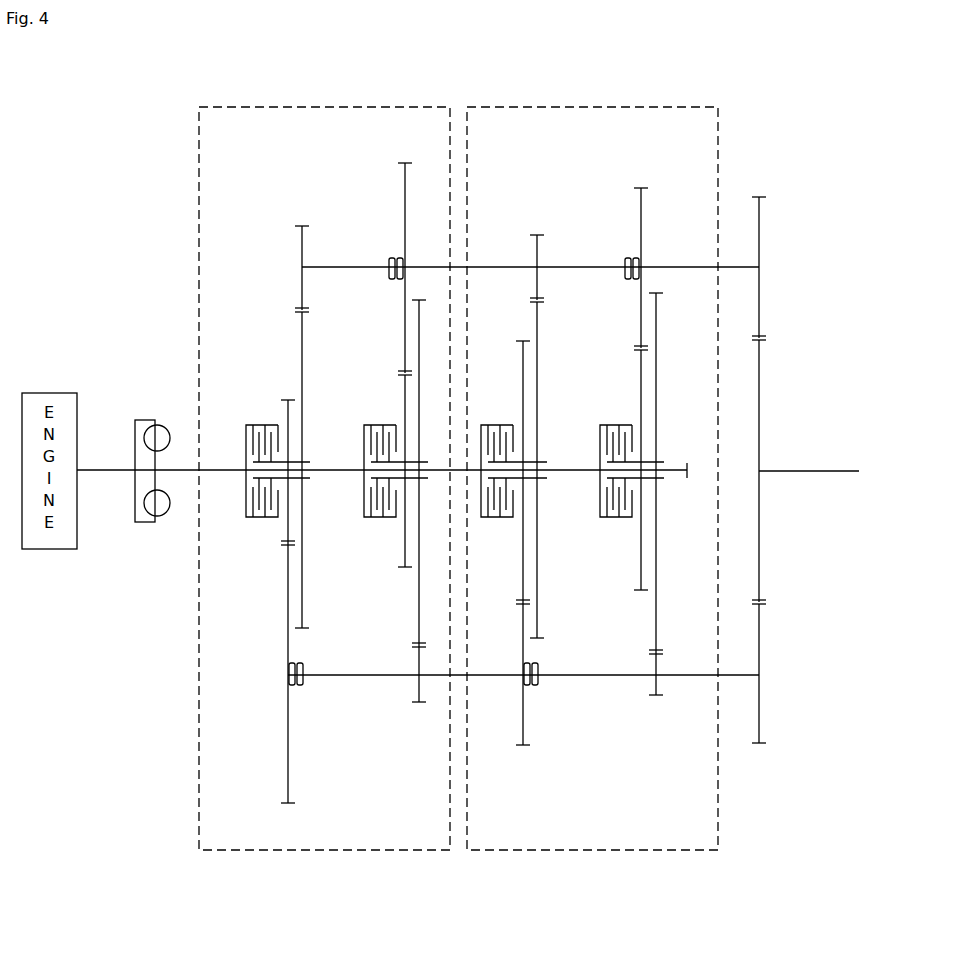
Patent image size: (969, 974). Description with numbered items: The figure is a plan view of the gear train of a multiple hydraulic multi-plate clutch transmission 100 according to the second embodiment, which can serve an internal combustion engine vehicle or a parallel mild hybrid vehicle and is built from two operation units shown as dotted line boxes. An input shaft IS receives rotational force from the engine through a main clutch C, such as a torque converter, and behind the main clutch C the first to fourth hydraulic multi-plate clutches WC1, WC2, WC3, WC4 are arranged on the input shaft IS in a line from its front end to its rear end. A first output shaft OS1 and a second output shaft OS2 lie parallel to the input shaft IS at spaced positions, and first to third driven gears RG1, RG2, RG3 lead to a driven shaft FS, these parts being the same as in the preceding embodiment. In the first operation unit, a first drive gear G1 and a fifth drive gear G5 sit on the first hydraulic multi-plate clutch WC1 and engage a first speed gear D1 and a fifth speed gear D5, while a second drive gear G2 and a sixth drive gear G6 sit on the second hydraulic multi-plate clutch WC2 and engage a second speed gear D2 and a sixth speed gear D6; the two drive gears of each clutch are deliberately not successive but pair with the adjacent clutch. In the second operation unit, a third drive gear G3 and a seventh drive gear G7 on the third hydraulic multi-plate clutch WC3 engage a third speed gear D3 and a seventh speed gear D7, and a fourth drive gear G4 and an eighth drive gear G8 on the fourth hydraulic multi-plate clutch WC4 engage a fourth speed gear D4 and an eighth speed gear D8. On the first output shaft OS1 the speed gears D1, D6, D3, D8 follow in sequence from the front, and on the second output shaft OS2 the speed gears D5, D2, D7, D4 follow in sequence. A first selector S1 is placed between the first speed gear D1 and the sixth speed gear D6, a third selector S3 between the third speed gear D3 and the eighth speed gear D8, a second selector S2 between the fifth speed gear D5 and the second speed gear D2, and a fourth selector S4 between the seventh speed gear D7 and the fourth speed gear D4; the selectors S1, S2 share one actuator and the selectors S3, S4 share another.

The multiple hydraulic multi-plate clutch transmission 100 is at (752, 146).
The input shaft IS is at (185, 478).
The main clutch C is at (146, 534).
The first hydraulic multi-plate clutch WC1 is at (248, 530).
The second hydraulic multi-plate clutch WC2 is at (373, 524).
The third hydraulic multi-plate clutch WC3 is at (500, 528).
The fourth hydraulic multi-plate clutch WC4 is at (610, 524).
The first drive gear G1 is at (285, 405).
The second drive gear G2 is at (405, 394).
The third drive gear G3 is at (523, 385).
The fourth drive gear G4 is at (641, 377).
The fifth drive gear G5 is at (302, 345).
The sixth drive gear G6 is at (419, 333).
The seventh drive gear G7 is at (537, 348).
The eighth drive gear G8 is at (656, 400).
The first speed gear D1 is at (288, 752).
The second speed gear D2 is at (406, 258).
The third speed gear D3 is at (525, 723).
The fourth speed gear D4 is at (641, 258).
The fifth speed gear D5 is at (303, 257).
The sixth speed gear D6 is at (419, 686).
The seventh speed gear D7 is at (537, 257).
The eighth speed gear D8 is at (657, 686).
The first selector S1 is at (304, 688).
The second selector S2 is at (389, 262).
The third selector S3 is at (539, 688).
The fourth selector S4 is at (624, 262).
The first output shaft OS1 is at (490, 676).
The second output shaft OS2 is at (496, 267).
The first driven gear RG1 is at (759, 652).
The second driven gear RG2 is at (759, 230).
The third driven gear RG3 is at (759, 420).
The driven shaft FS is at (816, 472).